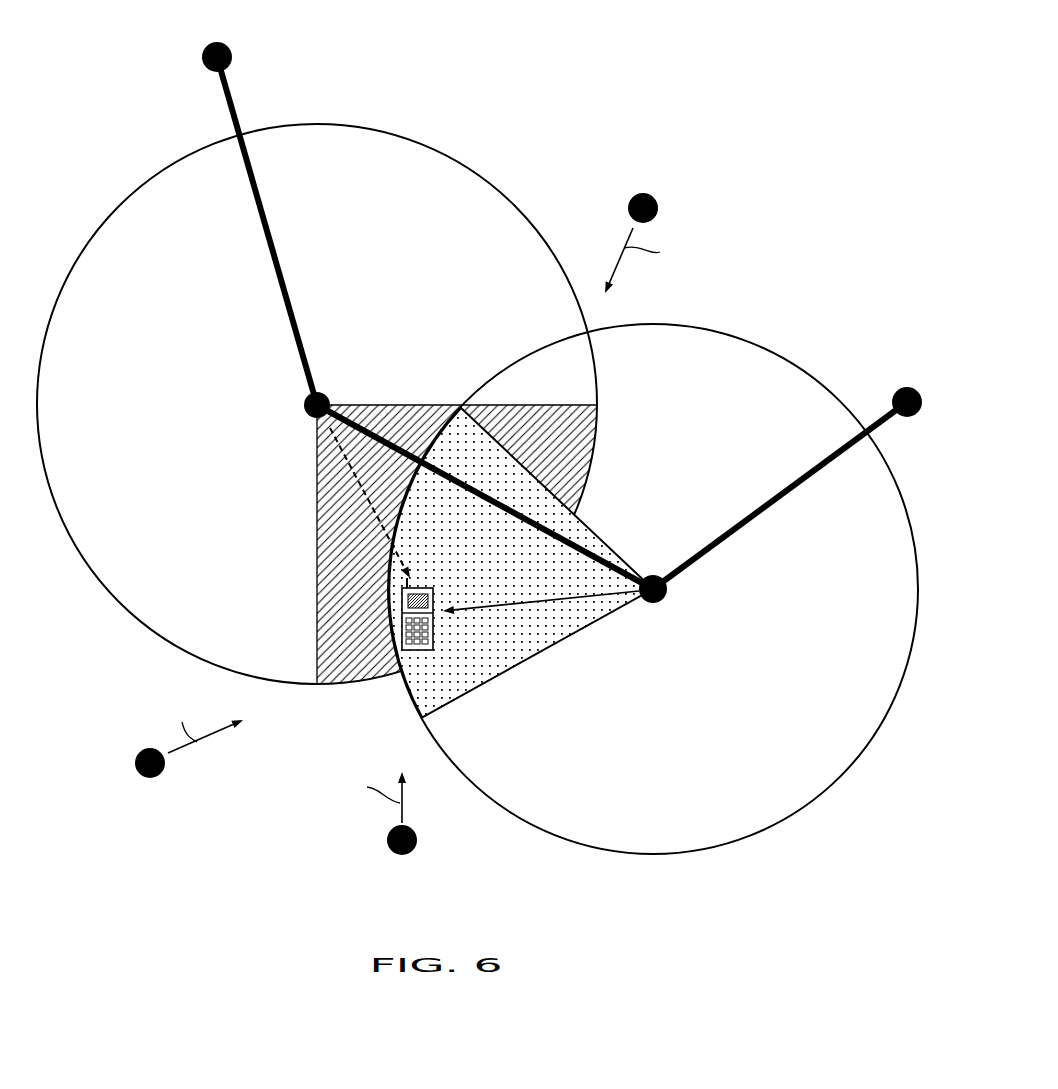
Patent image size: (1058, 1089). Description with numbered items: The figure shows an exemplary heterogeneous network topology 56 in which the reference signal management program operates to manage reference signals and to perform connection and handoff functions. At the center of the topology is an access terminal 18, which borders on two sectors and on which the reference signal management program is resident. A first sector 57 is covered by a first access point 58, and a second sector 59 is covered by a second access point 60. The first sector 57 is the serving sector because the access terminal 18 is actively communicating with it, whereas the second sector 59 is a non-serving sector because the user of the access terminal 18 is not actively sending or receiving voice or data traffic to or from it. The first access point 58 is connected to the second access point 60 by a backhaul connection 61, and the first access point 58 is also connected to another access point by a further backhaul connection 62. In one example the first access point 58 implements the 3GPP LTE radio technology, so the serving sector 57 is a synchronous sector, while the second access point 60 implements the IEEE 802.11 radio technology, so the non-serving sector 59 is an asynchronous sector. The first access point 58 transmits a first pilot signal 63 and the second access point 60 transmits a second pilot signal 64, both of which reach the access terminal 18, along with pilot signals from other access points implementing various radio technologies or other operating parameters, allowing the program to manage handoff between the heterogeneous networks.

The heterogeneous network topology 56 is at (563, 38).
The first sector 57 is at (487, 682).
The first access point 58 is at (650, 575).
The second sector 59 is at (317, 648).
The second access point 60 is at (302, 406).
The backhaul connection 61 is at (364, 424).
The backhaul connection 62 is at (790, 486).
The first pilot signal 63 is at (581, 598).
The second pilot signal 64 is at (340, 447).
The access terminal 18 is at (436, 597).